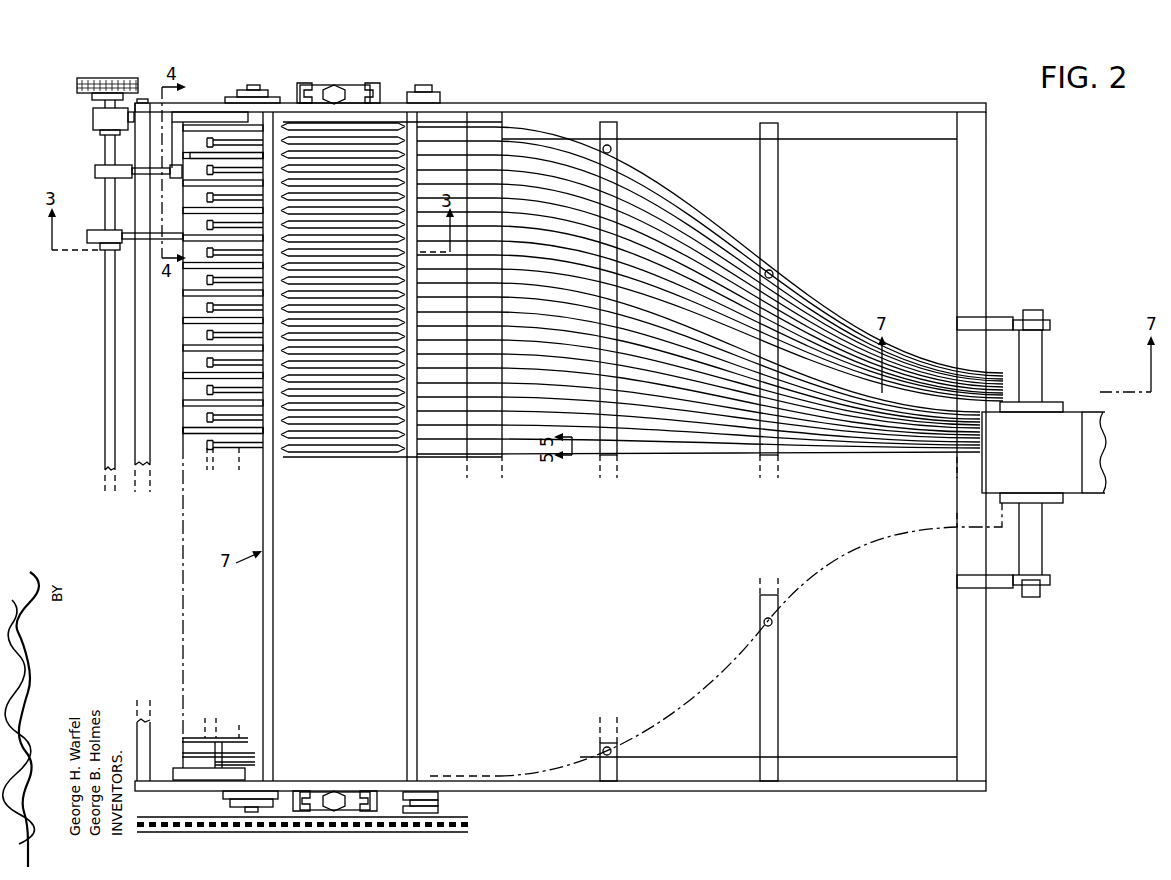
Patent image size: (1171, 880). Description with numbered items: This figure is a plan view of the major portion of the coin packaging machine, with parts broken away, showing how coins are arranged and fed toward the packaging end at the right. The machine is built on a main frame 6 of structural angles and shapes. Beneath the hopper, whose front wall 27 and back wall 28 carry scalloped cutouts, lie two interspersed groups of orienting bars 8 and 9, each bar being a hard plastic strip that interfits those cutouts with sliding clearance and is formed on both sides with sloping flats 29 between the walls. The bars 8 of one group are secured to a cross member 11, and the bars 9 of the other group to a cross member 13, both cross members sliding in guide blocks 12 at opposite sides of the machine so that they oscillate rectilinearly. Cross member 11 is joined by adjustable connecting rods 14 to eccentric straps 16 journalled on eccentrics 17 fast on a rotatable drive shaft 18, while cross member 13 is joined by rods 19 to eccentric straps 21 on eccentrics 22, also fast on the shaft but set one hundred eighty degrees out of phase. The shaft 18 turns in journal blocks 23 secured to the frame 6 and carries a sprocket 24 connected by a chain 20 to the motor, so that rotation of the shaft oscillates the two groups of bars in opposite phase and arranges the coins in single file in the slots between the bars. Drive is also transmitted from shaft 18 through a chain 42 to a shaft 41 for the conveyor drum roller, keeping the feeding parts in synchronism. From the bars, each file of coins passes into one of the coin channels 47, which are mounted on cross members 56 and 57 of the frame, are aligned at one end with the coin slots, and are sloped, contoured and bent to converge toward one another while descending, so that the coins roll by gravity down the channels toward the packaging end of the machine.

The main frame 6 is at (740, 792).
The orienting bars 8 is at (192, 146).
The orienting bars 9 is at (222, 162).
The cross member 11 is at (190, 314).
The guide blocks 12 is at (205, 114).
The cross member 13 is at (238, 418).
The connecting rods 14 is at (158, 175).
The eccentric straps 16 is at (98, 168).
The eccentrics 17 is at (138, 185).
The drive shaft 18 is at (105, 197).
The rods 19 is at (145, 250).
The chain 20 is at (86, 78).
The eccentric straps 21 is at (98, 232).
The eccentrics 22 is at (100, 248).
The journal blocks 23 is at (93, 122).
The sprocket 24 is at (118, 82).
The front wall 27 is at (418, 670).
The back wall 28 is at (265, 654).
The flats 29 is at (290, 126).
The shaft 41 is at (440, 806).
The chain 42 is at (330, 833).
The coin channels 47 is at (512, 452).
The cross member 56 is at (619, 153).
The cross member 57 is at (772, 232).